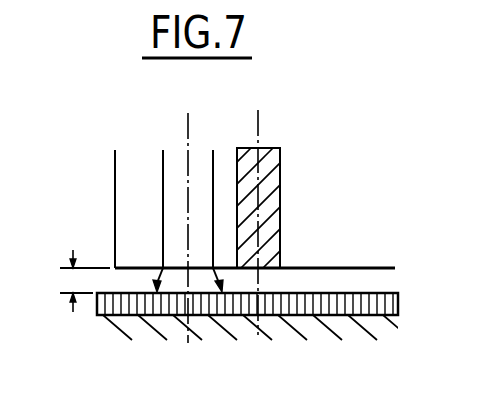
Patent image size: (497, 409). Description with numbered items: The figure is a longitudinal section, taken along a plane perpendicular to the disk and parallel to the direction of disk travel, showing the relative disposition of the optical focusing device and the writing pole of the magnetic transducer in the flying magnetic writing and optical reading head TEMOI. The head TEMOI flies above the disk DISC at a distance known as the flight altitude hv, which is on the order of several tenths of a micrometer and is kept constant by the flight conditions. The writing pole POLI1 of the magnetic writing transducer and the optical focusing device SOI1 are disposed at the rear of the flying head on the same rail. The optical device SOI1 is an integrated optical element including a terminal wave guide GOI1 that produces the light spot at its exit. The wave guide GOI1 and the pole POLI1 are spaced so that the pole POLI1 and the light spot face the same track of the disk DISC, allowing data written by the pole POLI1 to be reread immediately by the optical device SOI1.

The terminal wave guide GOI1 is at (162, 206).
The optical focusing device SOI1 is at (198, 160).
The writing pole POLI1 is at (283, 164).
The flying magnetic writing and optical reading head TEMOI is at (298, 215).
The disk DISC is at (332, 324).
The flight altitude hv is at (76, 281).